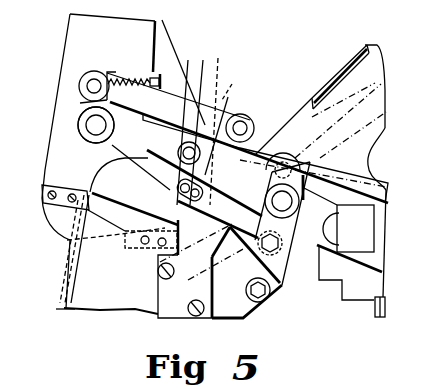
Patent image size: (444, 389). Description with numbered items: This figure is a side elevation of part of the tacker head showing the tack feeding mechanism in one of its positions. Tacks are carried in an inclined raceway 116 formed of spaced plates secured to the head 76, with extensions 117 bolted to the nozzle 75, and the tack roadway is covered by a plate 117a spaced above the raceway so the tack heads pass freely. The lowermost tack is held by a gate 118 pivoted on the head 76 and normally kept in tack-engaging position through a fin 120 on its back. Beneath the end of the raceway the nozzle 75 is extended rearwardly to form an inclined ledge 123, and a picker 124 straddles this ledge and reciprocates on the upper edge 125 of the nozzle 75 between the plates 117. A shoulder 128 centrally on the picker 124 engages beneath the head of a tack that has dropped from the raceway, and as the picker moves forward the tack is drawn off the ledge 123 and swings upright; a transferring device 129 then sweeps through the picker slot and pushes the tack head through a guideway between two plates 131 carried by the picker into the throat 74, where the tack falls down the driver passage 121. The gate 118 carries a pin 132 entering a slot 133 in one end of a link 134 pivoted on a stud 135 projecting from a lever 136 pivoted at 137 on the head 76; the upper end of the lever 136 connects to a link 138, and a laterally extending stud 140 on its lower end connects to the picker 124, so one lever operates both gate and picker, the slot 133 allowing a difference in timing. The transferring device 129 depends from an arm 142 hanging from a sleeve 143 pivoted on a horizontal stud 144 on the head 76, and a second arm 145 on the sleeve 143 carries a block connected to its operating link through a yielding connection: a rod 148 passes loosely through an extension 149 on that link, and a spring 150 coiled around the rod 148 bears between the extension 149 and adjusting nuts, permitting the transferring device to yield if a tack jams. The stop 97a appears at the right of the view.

The throat 74 is at (60, 302).
The nozzle 75 is at (105, 308).
The head 76 is at (112, 30).
The stop block 97a is at (364, 247).
The inclined raceway 116 is at (370, 78).
The extensions 117 is at (180, 318).
The plate 117a is at (289, 112).
The gate 118 is at (221, 121).
The fin 120 is at (229, 119).
The driver passage 121 is at (67, 240).
The inclined ledge 123 is at (153, 313).
The picker 124 is at (227, 286).
The upper edge 125 is at (243, 309).
The shoulder 128 is at (176, 219).
The transferring device 129 is at (152, 193).
The plates 131 is at (76, 187).
The pin 132 is at (189, 142).
The slot 133 is at (222, 100).
The link 134 is at (228, 195).
The stud 135 is at (282, 247).
The lever 136 is at (289, 231).
The pivot 137 is at (293, 203).
The link 138 is at (383, 159).
The stud 140 is at (255, 295).
The arm 142 is at (132, 155).
The sleeve 143 is at (93, 127).
The horizontal stud 144 is at (80, 115).
The second arm 145 is at (85, 103).
The rod 148 is at (161, 74).
The extension 149 is at (106, 72).
The spring 150 is at (129, 78).